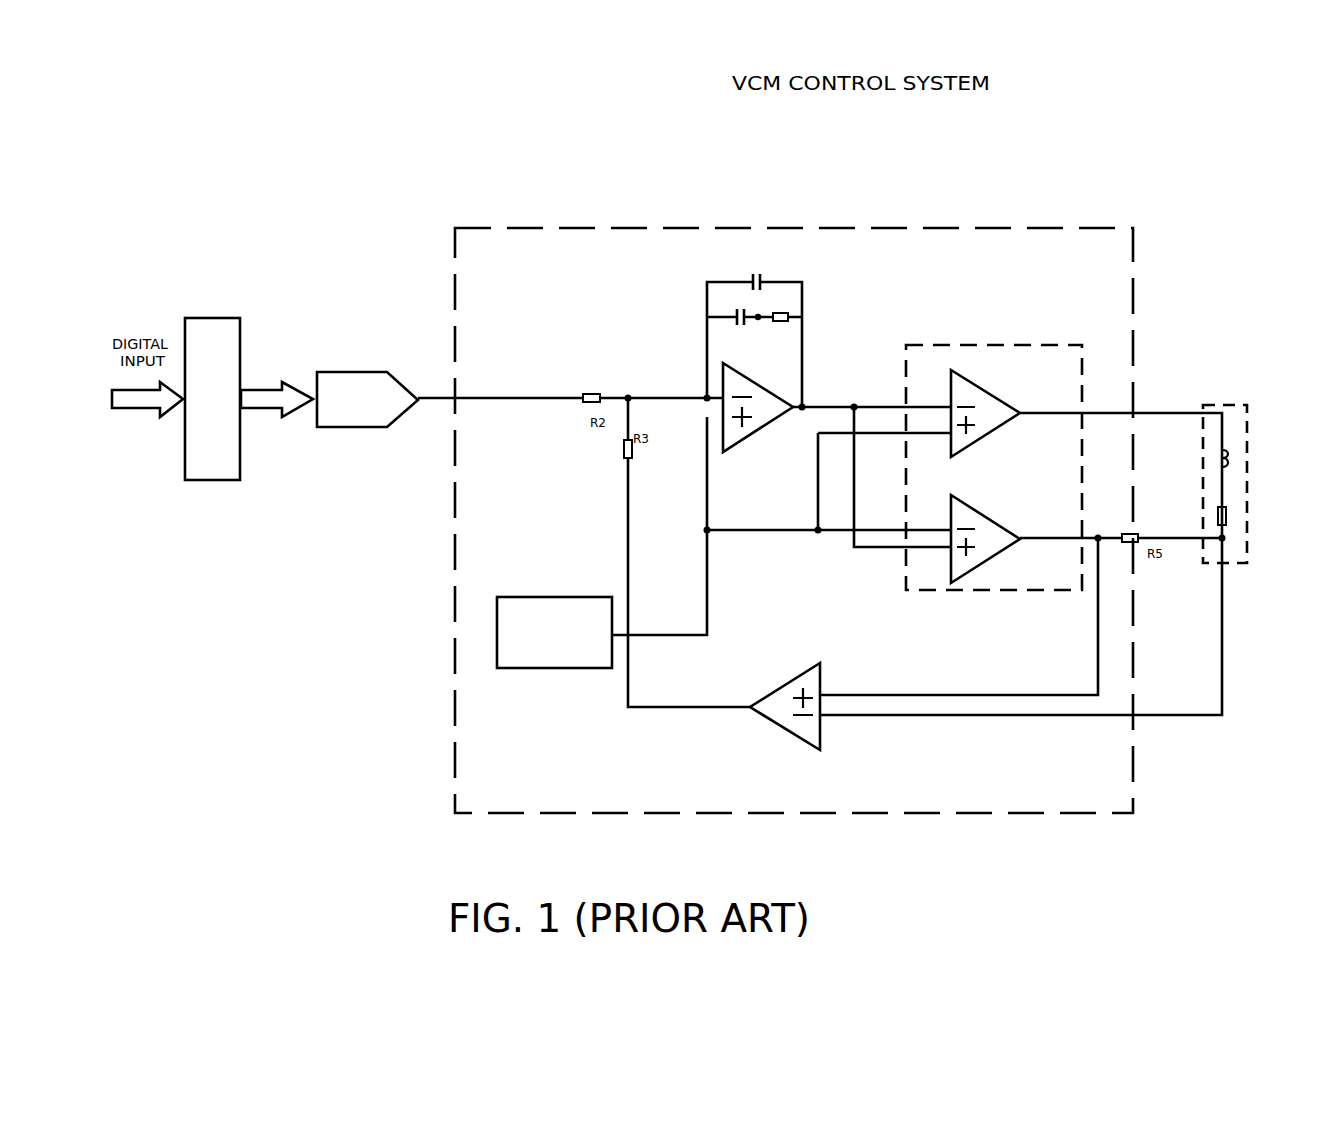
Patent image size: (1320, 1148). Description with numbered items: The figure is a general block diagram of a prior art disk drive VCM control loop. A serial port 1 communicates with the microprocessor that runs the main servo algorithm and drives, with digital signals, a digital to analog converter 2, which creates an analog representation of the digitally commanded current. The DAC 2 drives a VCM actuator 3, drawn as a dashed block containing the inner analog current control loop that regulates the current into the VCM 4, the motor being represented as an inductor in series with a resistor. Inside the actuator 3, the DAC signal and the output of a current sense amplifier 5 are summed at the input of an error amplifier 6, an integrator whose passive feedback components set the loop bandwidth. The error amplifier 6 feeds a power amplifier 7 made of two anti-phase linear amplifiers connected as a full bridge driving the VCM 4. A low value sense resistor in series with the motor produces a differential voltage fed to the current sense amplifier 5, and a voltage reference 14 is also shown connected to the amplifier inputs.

The serial port 1 is at (223, 318).
The digital to analog converter 2 is at (367, 372).
The VCM actuator 3 is at (682, 227).
The VCM 4 is at (1243, 405).
The current sense amplifier 5 is at (788, 678).
The error amplifier 6 is at (745, 372).
The VCM power amplifier 7 is at (975, 345).
The voltage reference 14 is at (553, 597).